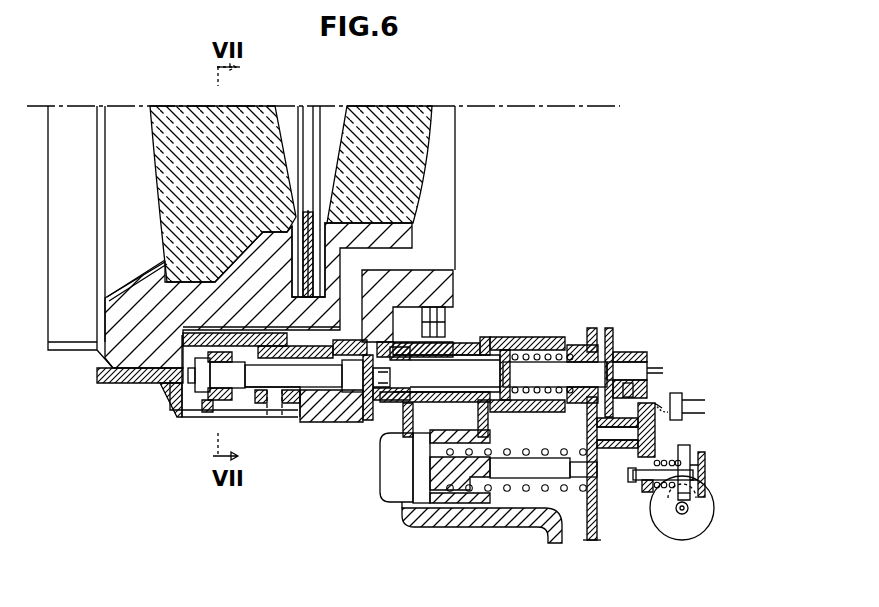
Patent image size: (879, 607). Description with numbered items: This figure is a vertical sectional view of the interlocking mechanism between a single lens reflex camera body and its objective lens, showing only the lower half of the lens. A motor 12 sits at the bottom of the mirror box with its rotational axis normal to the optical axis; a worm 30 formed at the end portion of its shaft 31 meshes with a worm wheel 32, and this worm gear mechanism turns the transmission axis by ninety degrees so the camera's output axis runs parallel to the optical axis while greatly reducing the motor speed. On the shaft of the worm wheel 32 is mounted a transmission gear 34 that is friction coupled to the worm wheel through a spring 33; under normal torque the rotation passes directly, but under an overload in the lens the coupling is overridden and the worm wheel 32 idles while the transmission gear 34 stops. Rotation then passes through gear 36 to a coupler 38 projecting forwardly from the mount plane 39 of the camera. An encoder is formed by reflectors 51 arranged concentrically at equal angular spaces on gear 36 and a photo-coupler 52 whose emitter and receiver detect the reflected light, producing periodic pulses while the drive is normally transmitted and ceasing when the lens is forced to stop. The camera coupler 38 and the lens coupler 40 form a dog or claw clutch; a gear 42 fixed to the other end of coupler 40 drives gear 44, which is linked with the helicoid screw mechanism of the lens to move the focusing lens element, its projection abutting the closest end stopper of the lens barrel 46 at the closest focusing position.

The motor 12 is at (701, 522).
The worm 30 is at (673, 511).
The shaft 31 is at (682, 515).
The worm wheel 32 is at (684, 456).
The spring 33 is at (665, 453).
The transmission gear 34 is at (643, 493).
The gear 36 is at (647, 412).
The coupler 38 is at (460, 367).
The mount plane 39 is at (384, 402).
The coupler 40 is at (352, 382).
The gear 42 is at (220, 400).
The gear 44 is at (200, 342).
The lens barrel 46 is at (165, 408).
The reflectors 51 is at (662, 418).
The photo-coupler 52 is at (684, 397).